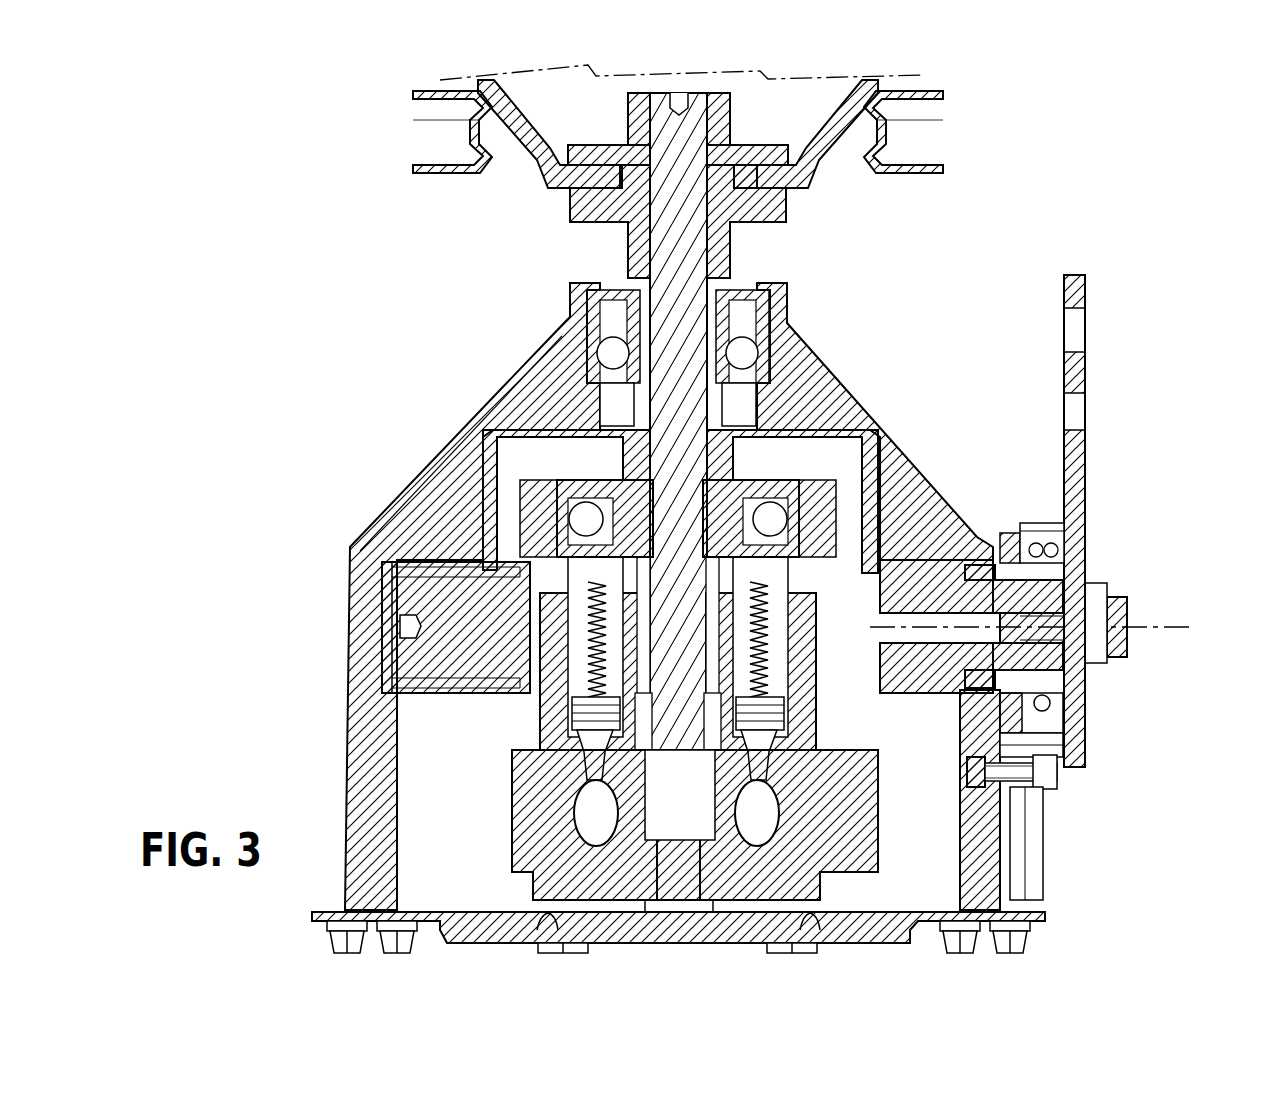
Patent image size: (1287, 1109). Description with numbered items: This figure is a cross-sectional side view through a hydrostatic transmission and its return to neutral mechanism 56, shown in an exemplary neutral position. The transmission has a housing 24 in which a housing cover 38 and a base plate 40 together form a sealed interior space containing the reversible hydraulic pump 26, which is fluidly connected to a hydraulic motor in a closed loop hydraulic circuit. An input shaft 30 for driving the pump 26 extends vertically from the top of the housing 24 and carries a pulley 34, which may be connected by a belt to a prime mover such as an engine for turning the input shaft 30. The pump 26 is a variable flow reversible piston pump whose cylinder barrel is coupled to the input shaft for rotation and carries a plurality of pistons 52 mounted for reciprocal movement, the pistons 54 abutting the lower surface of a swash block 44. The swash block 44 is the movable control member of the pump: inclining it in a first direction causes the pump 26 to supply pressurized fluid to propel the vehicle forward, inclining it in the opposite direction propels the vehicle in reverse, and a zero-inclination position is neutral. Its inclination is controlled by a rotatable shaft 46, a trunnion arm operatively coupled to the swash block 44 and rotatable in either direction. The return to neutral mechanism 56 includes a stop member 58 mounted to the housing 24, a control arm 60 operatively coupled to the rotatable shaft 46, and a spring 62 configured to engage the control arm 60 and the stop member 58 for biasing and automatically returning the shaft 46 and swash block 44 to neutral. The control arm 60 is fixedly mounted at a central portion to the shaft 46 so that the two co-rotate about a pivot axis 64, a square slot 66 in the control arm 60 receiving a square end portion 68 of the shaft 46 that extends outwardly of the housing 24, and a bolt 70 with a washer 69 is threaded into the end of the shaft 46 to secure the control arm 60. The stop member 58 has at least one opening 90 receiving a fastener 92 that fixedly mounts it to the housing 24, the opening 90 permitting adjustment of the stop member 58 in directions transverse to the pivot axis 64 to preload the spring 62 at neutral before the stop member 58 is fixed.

The housing 24 is at (412, 500).
The reversible hydraulic pump 26 is at (530, 492).
The input shaft 30 is at (680, 200).
The pulley 34 is at (945, 97).
The housing cover 38 is at (367, 585).
The base plate 40 is at (428, 935).
The swash block 44 is at (778, 500).
The rotatable shaft 46 is at (912, 617).
The pistons 52 is at (553, 727).
The pistons 54 is at (577, 655).
The return to neutral mechanism 56 is at (1103, 521).
The stop member 58 is at (1028, 722).
The control arm 60 is at (1078, 472).
The spring 62 is at (1062, 545).
The pivot axis 64 is at (1188, 640).
The square slot 66 is at (1098, 690).
The square end portion 68 is at (1070, 692).
The washer 69 is at (1110, 656).
The bolt 70 is at (1118, 622).
The opening 90 is at (1040, 825).
The fastener 92 is at (1040, 790).